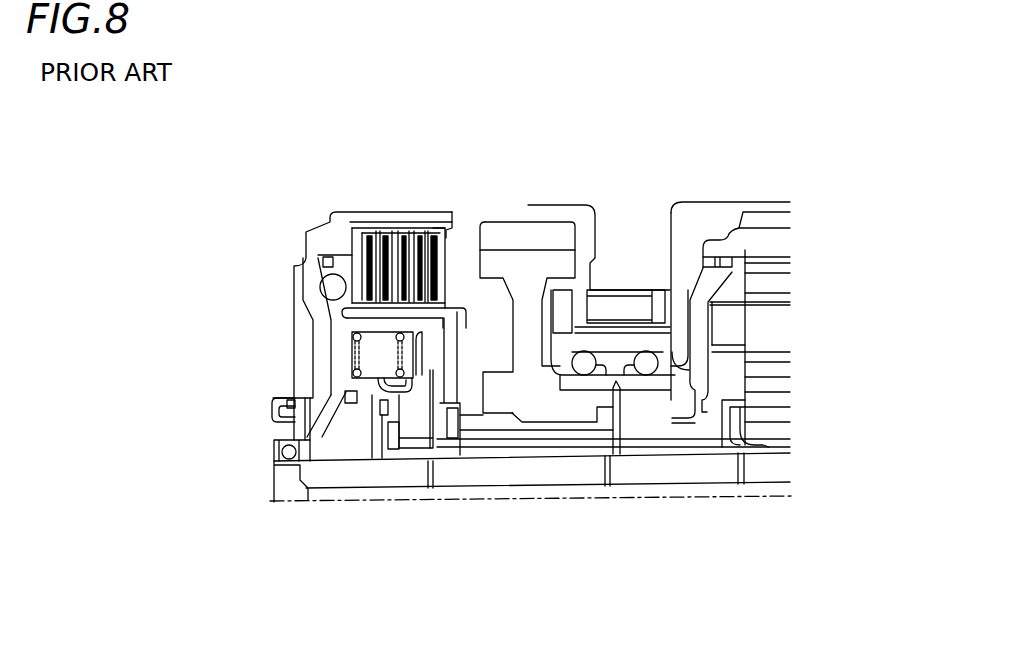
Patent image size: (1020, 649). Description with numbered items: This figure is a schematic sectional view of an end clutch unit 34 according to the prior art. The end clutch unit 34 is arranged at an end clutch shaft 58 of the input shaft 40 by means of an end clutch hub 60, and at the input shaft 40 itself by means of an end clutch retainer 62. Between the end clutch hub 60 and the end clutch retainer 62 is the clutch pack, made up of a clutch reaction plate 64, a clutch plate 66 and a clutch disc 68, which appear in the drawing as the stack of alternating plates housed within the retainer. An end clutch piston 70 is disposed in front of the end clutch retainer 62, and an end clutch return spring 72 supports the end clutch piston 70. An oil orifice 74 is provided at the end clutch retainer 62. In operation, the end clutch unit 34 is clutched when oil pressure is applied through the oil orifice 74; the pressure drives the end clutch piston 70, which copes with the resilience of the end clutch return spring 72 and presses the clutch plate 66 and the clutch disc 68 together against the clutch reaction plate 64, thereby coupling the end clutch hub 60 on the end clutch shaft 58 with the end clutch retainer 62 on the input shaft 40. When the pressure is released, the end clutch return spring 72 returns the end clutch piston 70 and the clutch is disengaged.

The end clutch unit 34 is at (255, 266).
The input shaft 40 is at (380, 480).
The end clutch shaft 58 is at (636, 448).
The end clutch hub 60 is at (448, 330).
The end clutch retainer 62 is at (313, 348).
The clutch reaction plate 64 is at (430, 246).
The clutch plate 66 is at (377, 246).
The clutch disc 68 is at (402, 246).
The end clutch piston 70 is at (327, 320).
The end clutch return spring 72 is at (378, 360).
The oil orifice 74 is at (280, 397).